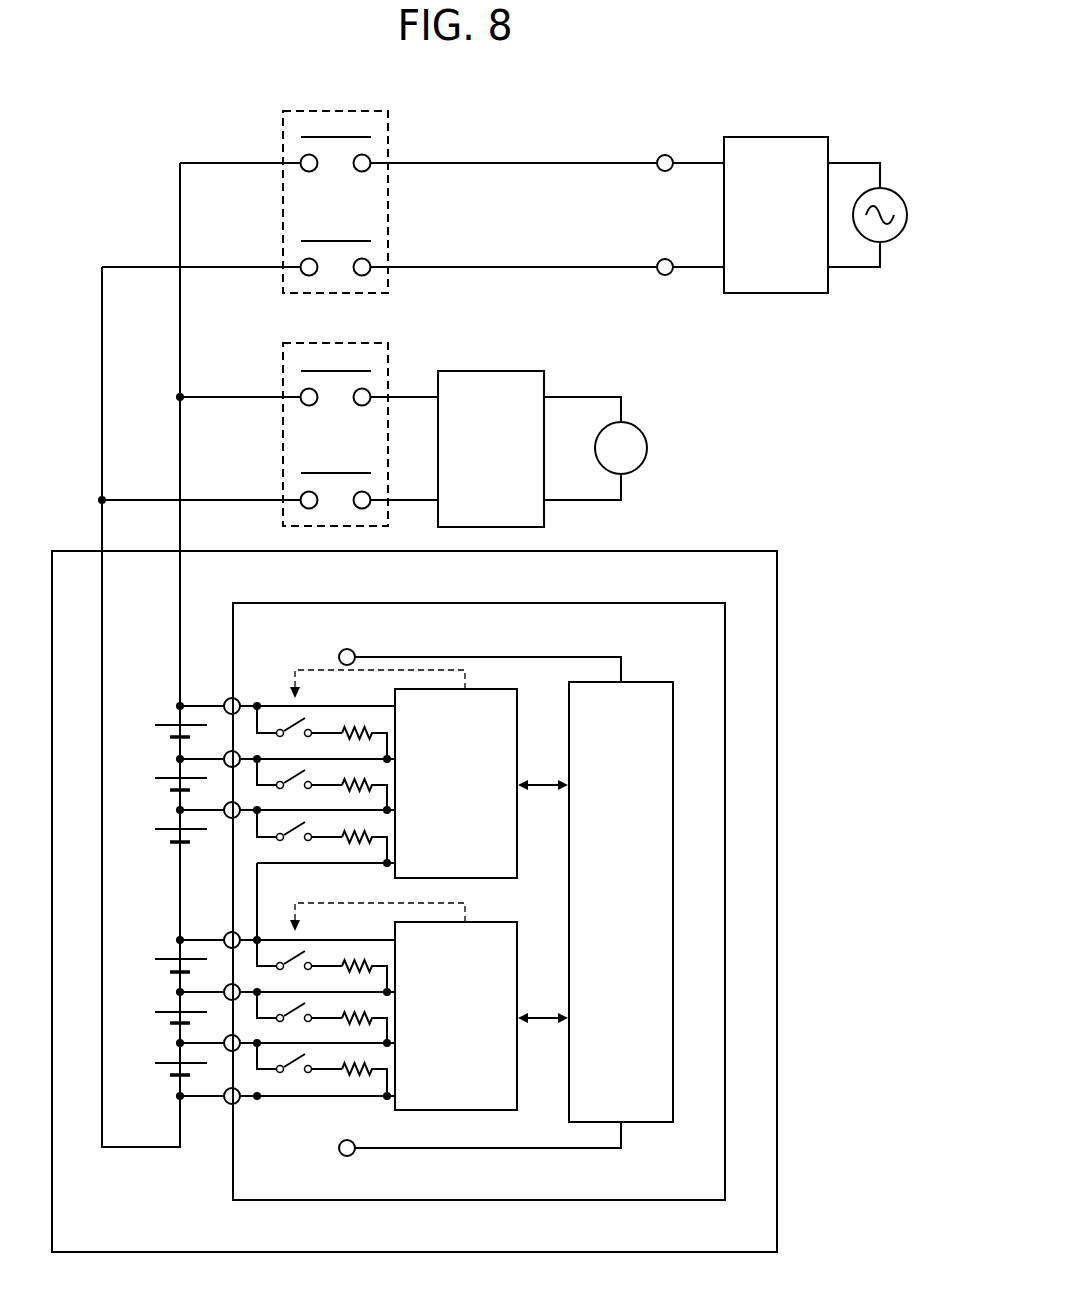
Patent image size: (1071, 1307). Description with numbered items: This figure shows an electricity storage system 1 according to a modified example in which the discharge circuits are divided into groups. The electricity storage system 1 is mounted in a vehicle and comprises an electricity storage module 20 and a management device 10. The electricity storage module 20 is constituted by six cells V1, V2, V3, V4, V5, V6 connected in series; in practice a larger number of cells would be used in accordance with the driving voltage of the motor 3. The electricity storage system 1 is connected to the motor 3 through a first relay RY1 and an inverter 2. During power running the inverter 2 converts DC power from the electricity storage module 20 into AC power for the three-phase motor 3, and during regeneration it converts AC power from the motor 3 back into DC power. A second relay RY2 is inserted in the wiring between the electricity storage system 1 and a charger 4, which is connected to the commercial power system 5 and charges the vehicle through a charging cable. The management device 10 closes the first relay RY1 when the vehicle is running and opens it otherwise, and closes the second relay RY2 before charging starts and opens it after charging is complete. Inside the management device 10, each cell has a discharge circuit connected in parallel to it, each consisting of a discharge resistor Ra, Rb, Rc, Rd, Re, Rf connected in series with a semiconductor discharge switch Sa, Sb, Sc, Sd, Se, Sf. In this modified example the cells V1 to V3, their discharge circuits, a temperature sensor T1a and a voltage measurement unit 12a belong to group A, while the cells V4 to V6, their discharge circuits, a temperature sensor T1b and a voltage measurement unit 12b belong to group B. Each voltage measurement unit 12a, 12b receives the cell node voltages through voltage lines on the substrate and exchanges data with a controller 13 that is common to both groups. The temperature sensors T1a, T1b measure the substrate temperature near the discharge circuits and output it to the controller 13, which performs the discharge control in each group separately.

The electricity storage system 1 is at (748, 551).
The inverter 2 is at (516, 369).
The motor 3 is at (630, 422).
The charger 4 is at (800, 137).
The system 5 is at (901, 193).
The management device 10 is at (693, 603).
The voltage measurement unit 12a is at (518, 698).
The voltage measurement unit 12b is at (518, 930).
The controller 13 is at (642, 682).
The electricity storage module 20 is at (176, 864).
The first relay RY1 is at (388, 363).
The second relay RY2 is at (388, 128).
The temperature sensor T1a is at (475, 653).
The temperature sensor T1b is at (475, 1136).
The cell V1 is at (167, 733).
The cell V2 is at (167, 786).
The cell V3 is at (167, 837).
The cell V4 is at (167, 967).
The cell V5 is at (167, 1019).
The cell V6 is at (167, 1071).
The discharge switch Sa is at (299, 734).
The discharge switch Sb is at (299, 786).
The discharge switch Sc is at (299, 838).
The discharge switch Sd is at (299, 967).
The discharge switch Se is at (299, 1019).
The discharge switch Sf is at (299, 1070).
The discharge resistor Ra is at (364, 744).
The discharge resistor Rb is at (364, 796).
The discharge resistor Rc is at (364, 848).
The discharge resistor Rd is at (364, 977).
The discharge resistor Re is at (364, 1029).
The discharge resistor Rf is at (364, 1080).